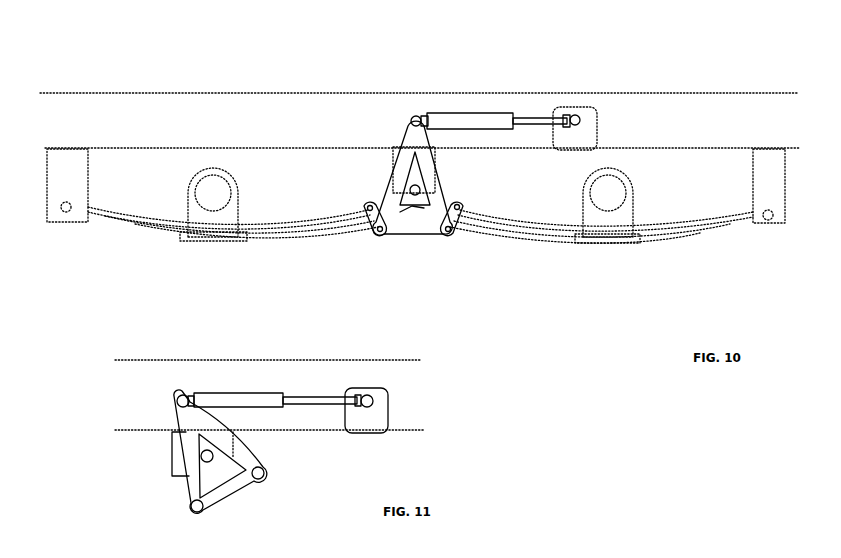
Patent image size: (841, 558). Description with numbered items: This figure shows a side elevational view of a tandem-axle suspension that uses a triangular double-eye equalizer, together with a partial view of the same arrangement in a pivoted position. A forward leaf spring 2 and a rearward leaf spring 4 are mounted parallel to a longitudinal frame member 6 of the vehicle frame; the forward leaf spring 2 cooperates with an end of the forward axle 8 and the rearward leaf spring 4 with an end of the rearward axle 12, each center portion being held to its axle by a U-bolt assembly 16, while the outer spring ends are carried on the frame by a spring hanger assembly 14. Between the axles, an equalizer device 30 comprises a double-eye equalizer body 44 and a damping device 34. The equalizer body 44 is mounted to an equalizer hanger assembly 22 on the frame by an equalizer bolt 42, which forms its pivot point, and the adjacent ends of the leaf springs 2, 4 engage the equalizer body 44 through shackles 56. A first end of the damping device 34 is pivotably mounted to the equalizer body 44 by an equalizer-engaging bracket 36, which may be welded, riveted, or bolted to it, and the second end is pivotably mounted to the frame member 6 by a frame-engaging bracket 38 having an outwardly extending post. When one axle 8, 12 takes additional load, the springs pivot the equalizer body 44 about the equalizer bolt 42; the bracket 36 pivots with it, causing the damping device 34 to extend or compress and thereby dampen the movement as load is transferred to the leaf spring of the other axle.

In FIG. 10, the forward leaf spring 2 is at (538, 237).
In FIG. 10, the rearward leaf spring 4 is at (153, 228).
In FIG. 10, the frame member 6 is at (542, 93).
In FIG. 10, the forward axle 8 is at (620, 192).
In FIG. 10, the rearward axle 12 is at (205, 197).
In FIG. 10, the spring hanger assembly 14 is at (62, 212).
In FIG. 10, the U-bolt assembly 16 is at (198, 213).
In FIG. 10, the equalizer hanger assembly 22 is at (392, 157).
In FIG. 11, the equalizer hanger assembly 22 is at (175, 447).
In FIG. 10, the equalizer device 30 is at (380, 68).
In FIG. 11, the equalizer device 30 is at (150, 370).
In FIG. 10, the damping device 34 is at (455, 114).
In FIG. 11, the damping device 34 is at (262, 392).
In FIG. 10, the equalizer-engaging bracket 36 is at (430, 203).
In FIG. 11, the equalizer-engaging bracket 36 is at (244, 468).
In FIG. 10, the frame-engaging bracket 38 is at (583, 128).
In FIG. 11, the frame-engaging bracket 38 is at (382, 390).
In FIG. 10, the equalizer bolt 42 is at (411, 191).
In FIG. 11, the equalizer bolt 42 is at (211, 455).
In FIG. 10, the double-eye equalizer body 44 is at (423, 207).
In FIG. 11, the double-eye equalizer body 44 is at (203, 482).
In FIG. 10, the shackle 56 is at (370, 218).